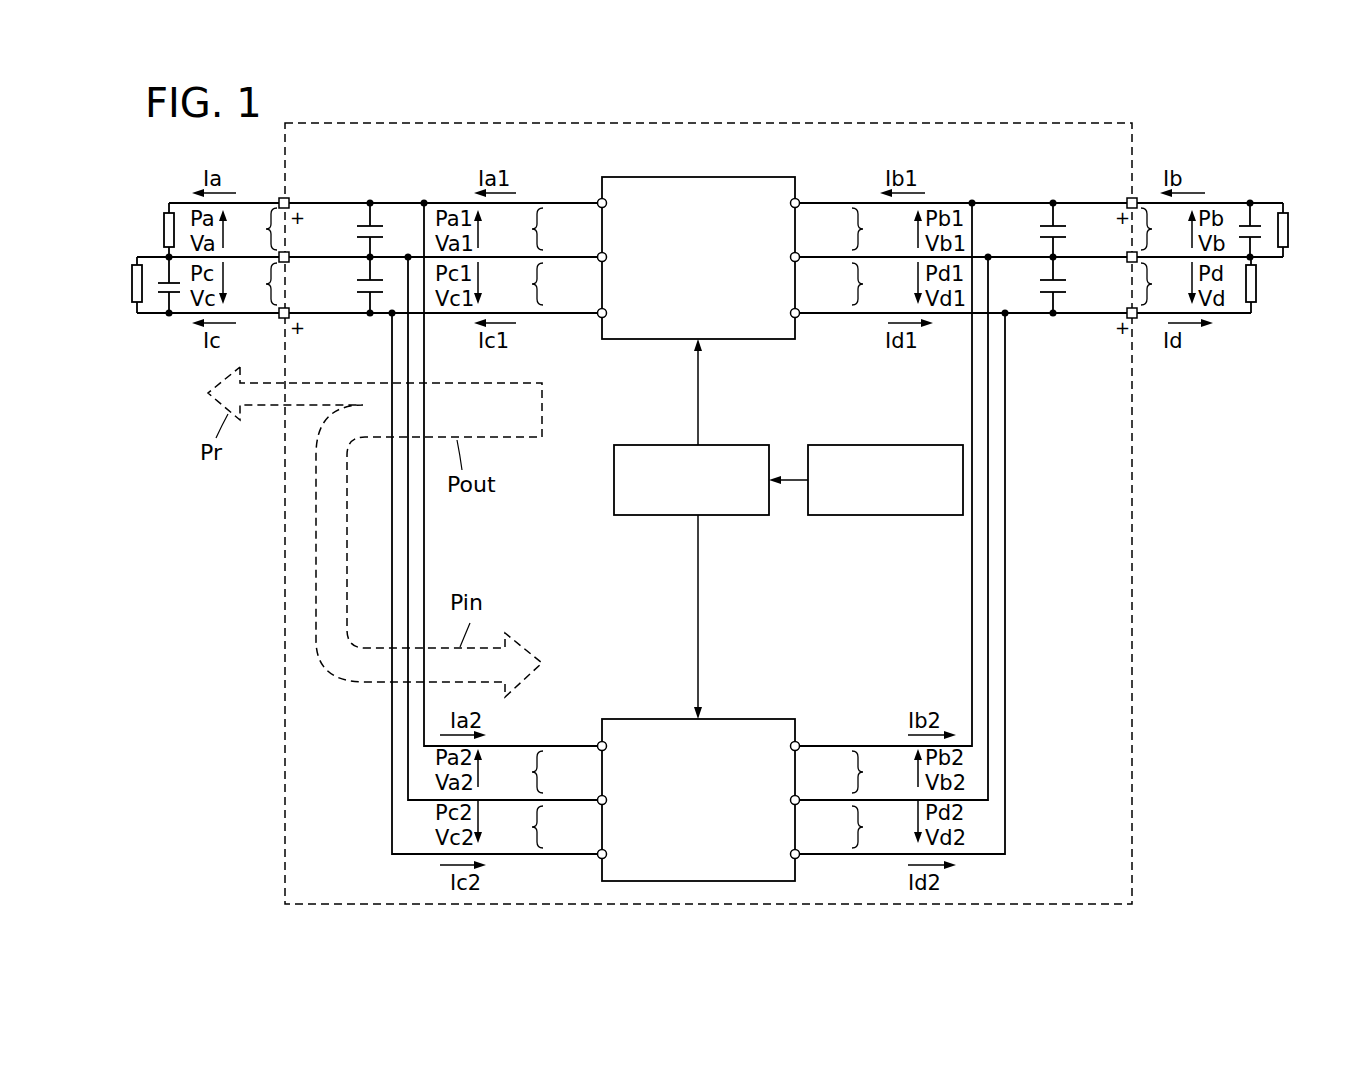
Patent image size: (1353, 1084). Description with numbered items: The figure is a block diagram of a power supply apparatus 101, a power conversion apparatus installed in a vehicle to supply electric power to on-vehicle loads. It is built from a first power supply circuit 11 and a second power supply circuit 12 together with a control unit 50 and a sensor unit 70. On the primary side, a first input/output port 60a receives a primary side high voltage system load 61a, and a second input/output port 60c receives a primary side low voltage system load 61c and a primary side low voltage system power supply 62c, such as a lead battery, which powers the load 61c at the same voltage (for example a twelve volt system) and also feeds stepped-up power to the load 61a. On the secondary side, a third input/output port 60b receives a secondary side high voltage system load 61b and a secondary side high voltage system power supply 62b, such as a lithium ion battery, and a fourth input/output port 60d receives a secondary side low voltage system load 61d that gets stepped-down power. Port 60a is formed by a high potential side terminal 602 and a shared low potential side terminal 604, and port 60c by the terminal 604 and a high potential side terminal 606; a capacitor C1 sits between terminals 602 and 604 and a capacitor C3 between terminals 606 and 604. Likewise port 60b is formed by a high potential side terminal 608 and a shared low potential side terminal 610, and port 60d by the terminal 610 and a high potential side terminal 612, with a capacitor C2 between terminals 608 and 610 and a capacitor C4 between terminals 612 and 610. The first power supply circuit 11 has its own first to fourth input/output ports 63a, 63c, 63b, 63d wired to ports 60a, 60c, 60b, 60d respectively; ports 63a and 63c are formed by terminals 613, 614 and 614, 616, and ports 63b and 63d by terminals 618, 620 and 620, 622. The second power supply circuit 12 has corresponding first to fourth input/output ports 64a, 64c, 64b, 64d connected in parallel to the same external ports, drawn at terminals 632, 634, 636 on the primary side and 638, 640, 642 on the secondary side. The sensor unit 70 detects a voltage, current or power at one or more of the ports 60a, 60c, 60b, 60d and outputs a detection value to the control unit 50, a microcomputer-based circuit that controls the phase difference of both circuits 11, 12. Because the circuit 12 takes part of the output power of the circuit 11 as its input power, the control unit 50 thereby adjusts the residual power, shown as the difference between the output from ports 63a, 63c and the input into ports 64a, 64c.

The power supply apparatus 101 is at (905, 121).
The first power supply circuit 11 is at (738, 178).
The second power supply circuit 12 is at (738, 720).
The control unit 50 is at (722, 445).
The sensor unit 70 is at (893, 445).
The high potential side terminal 602 is at (290, 198).
The low potential side terminal 604 is at (290, 252).
The high potential side terminal 606 is at (290, 308).
The high potential side terminal 608 is at (1126, 198).
The low potential side terminal 610 is at (1126, 252).
The high potential side terminal 612 is at (1126, 308).
The terminal 613 is at (598, 198).
The terminal 614 is at (598, 252).
The terminal 616 is at (598, 308).
The terminal 618 is at (799, 198).
The terminal 620 is at (799, 252).
The terminal 622 is at (799, 308).
The terminal of second power supply circuit 632 is at (598, 741).
The terminal of second power supply circuit 634 is at (598, 795).
The terminal of second power supply circuit 636 is at (598, 849).
The terminal of second power supply circuit 638 is at (799, 741).
The terminal of second power supply circuit 640 is at (799, 795).
The terminal of second power supply circuit 642 is at (799, 849).
The first input/output port 60a is at (252, 229).
The third input/output port 60b is at (1168, 229).
The second input/output port 60c is at (252, 284).
The fourth input/output port 60d is at (1168, 284).
The first input/output port 63a is at (515, 229).
The third input/output port 63b is at (880, 229).
The second input/output port 63c is at (515, 284).
The fourth input/output port 63d is at (880, 284).
The first input/output port 64a is at (516, 772).
The third input/output port 64b is at (880, 772).
The second input/output port 64c is at (516, 827).
The fourth input/output port 64d is at (880, 827).
The primary side high voltage system load 61a is at (169, 213).
The secondary side high voltage system load 61b is at (1286, 247).
The primary side low voltage system load 61c is at (137, 265).
The secondary side low voltage system load 61d is at (1254, 302).
The secondary side high voltage system power supply 62b is at (1258, 226).
The primary side low voltage system power supply 62c is at (158, 292).
The capacitor C1 is at (368, 226).
The capacitor C2 is at (1048, 226).
The capacitor C3 is at (360, 292).
The capacitor C4 is at (1044, 292).